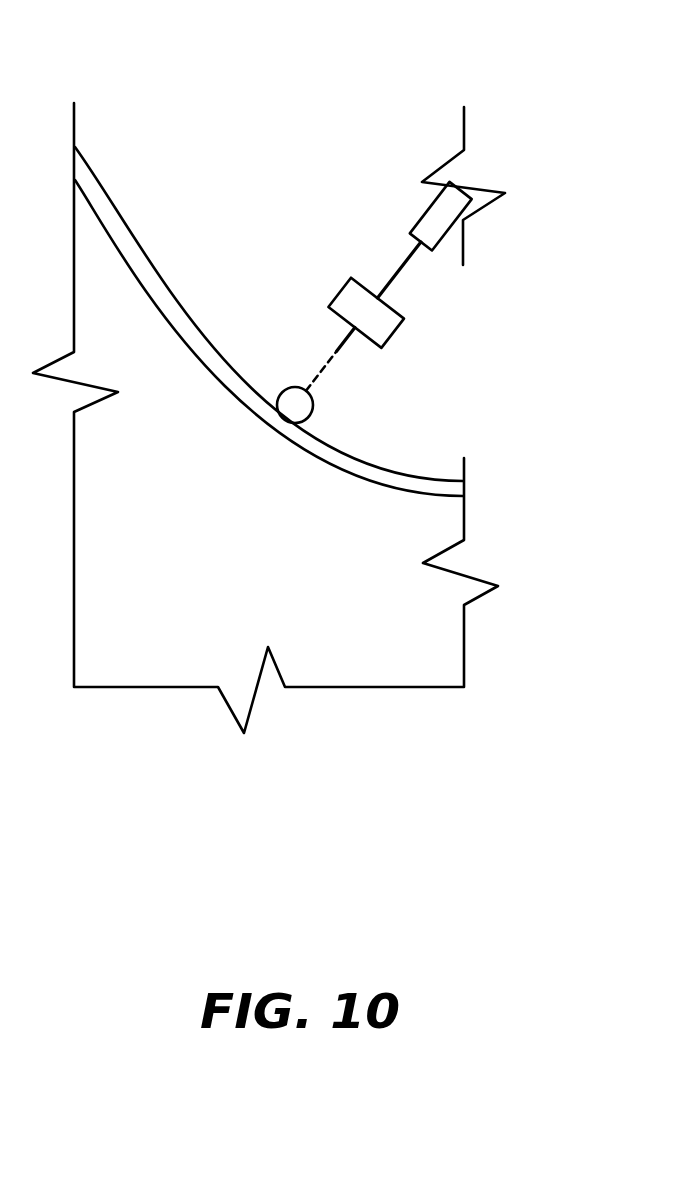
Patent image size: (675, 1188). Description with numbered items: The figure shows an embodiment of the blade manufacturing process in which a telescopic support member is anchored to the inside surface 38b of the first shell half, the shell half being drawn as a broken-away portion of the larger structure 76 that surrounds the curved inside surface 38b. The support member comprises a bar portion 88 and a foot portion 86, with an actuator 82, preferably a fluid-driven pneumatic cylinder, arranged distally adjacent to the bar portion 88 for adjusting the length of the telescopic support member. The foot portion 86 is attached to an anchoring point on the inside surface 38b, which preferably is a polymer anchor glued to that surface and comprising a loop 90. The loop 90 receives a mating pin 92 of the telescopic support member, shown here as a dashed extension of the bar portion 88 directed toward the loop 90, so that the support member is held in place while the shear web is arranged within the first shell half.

The inside surface of the first shell half 38b is at (108, 198).
The frame member 76 is at (175, 615).
The actuator 82 is at (420, 219).
The foot portion 86 is at (392, 335).
The bar portion 88 is at (400, 268).
The loop 90 is at (263, 378).
The mating pin 92 is at (342, 351).